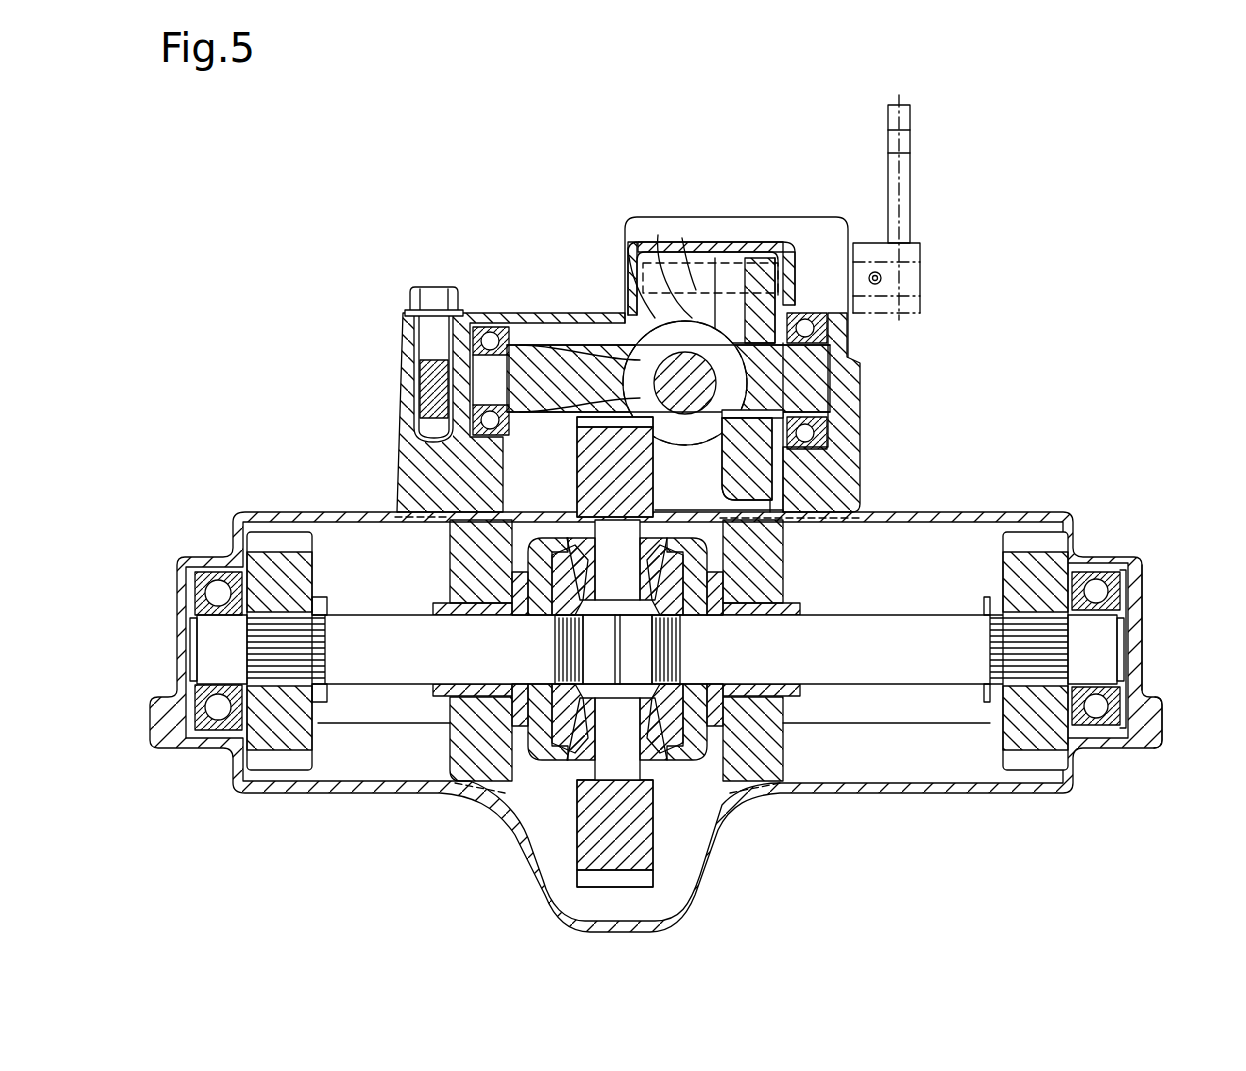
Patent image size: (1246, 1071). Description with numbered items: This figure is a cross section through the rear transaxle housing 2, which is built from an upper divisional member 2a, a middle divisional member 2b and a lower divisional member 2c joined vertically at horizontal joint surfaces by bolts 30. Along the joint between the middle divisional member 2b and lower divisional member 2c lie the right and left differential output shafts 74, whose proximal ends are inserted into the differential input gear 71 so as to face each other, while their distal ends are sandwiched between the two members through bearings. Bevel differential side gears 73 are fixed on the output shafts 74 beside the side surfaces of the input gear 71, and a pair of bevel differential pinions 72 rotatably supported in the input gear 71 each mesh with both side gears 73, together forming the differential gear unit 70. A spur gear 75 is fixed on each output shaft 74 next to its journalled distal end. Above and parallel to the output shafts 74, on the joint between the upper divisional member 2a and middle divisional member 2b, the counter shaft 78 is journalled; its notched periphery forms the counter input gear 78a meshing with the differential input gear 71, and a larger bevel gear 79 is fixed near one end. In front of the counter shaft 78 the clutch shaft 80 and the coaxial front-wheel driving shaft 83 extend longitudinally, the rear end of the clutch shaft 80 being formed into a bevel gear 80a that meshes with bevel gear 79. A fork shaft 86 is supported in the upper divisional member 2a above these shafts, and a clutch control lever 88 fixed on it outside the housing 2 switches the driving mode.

The rear transaxle housing 2 is at (1079, 491).
The upper divisional member 2a is at (753, 217).
The middle divisional member 2b is at (1142, 618).
The lower divisional member 2c is at (1160, 742).
The bolt 30 is at (437, 285).
The differential gear unit 70 is at (641, 647).
The differential input gear 71 is at (577, 456).
The differential pinion 72 is at (658, 535).
The differential side gear 73 is at (690, 540).
The differential output shaft 74 is at (413, 672).
The spur gear 75 is at (313, 557).
The counter shaft 78 is at (823, 370).
The counter input gear 78a is at (560, 338).
The bevel gear 79 is at (767, 470).
The clutch shaft 80 is at (668, 345).
The bevel gear 80a is at (648, 252).
The front-wheel driving shaft 83 is at (645, 310).
The fork shaft 86 is at (675, 265).
The clutch control lever 88 is at (910, 170).